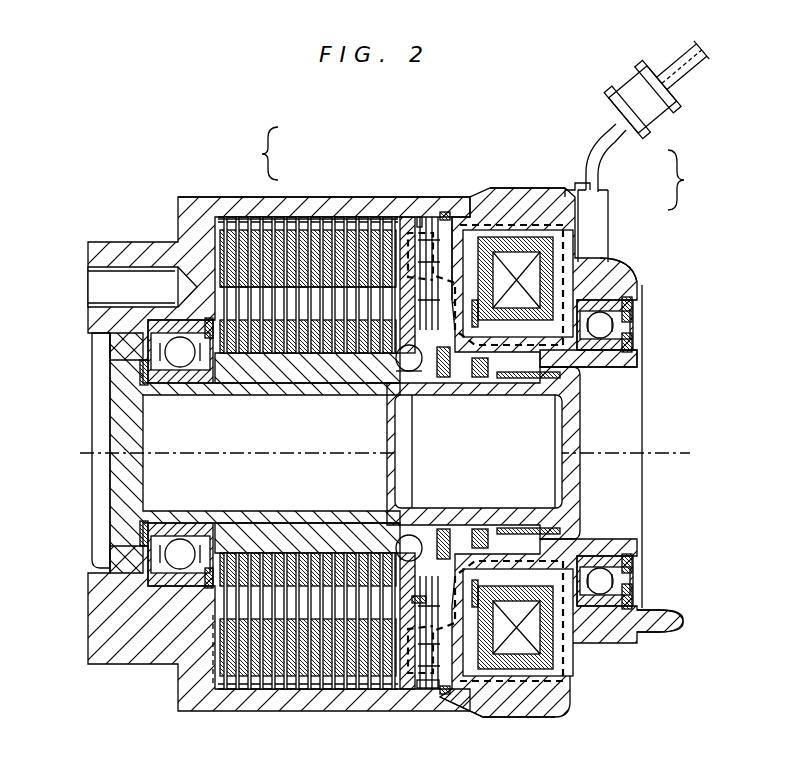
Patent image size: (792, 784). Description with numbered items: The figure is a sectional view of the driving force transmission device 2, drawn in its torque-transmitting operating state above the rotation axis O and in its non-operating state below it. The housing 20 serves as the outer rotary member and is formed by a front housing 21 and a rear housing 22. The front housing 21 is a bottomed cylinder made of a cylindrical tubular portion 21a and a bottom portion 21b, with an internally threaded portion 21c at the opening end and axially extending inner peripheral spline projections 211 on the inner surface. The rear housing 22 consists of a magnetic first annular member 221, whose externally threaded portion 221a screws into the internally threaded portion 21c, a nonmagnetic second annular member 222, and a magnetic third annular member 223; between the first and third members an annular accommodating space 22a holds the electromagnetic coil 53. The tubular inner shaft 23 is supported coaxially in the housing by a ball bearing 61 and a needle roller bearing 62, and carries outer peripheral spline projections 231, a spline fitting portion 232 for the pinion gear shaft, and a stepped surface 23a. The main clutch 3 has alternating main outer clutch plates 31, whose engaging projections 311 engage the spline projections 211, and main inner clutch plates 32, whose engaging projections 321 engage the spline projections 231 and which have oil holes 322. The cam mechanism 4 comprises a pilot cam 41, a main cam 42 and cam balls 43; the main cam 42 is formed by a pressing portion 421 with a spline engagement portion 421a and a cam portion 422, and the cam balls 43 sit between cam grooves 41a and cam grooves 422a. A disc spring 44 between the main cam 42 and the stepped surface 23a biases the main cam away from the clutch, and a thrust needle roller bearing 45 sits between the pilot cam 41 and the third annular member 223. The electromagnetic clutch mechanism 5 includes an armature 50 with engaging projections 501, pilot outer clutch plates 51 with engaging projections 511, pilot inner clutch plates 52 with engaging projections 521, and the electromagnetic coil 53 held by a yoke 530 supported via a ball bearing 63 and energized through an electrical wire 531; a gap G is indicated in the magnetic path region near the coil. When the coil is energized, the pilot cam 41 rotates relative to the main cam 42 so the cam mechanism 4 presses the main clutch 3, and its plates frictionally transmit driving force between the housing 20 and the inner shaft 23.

The driving force transmission device 2 is at (694, 136).
The main clutch 3 is at (203, 696).
The cam mechanism 4 is at (380, 205).
The electromagnetic clutch mechanism 5 is at (435, 205).
The housing 20 is at (691, 180).
The front housing 21 is at (580, 188).
The tubular portion 21a is at (262, 196).
The bottom portion 21b is at (198, 242).
The internally threaded portion 21c is at (540, 205).
The inner peripheral spline projections 211 is at (213, 685).
The rear housing 22 is at (583, 229).
The first annular member 221 is at (500, 205).
The externally threaded portion 221a is at (520, 697).
The second annular member 222 is at (453, 205).
The third annular member 223 is at (630, 358).
The accommodating space 22a is at (582, 664).
The inner shaft 23 is at (594, 518).
The stepped surface 23a is at (337, 508).
The outer peripheral spline projections 231 is at (273, 553).
The spline fitting portion 232 is at (508, 503).
The main outer clutch plates 31 is at (330, 687).
The engaging projections 311 is at (352, 690).
The main inner clutch plates 32 is at (177, 470).
The engaging projections 321 is at (292, 310).
The oil holes 322 is at (245, 300).
The pilot cam 41 is at (455, 355).
The cam grooves 41a is at (462, 365).
The main cam 42 is at (258, 153).
The pressing portion 421 is at (372, 213).
The cam portion 422 is at (378, 228).
The spline engagement portion 421a is at (335, 385).
The cam grooves 422a is at (412, 395).
The cam balls 43 is at (410, 380).
The disc spring 44 is at (370, 370).
The thrust needle roller bearing 45 is at (440, 557).
The armature 50 is at (409, 213).
The engaging projections 501 is at (408, 205).
The pilot outer clutch plates 51 is at (440, 688).
The engaging projections 511 is at (415, 692).
The pilot inner clutch plates 52 is at (430, 690).
The engaging projections 521 is at (420, 593).
The electromagnetic coil 53 is at (530, 277).
The yoke 530 is at (640, 283).
The electrical wire 531 is at (600, 140).
The ball bearing 61 is at (143, 372).
The needle roller bearing 62 is at (560, 375).
The ball bearing 63 is at (633, 303).
The gap G is at (525, 205).
The rotation axis O is at (681, 453).